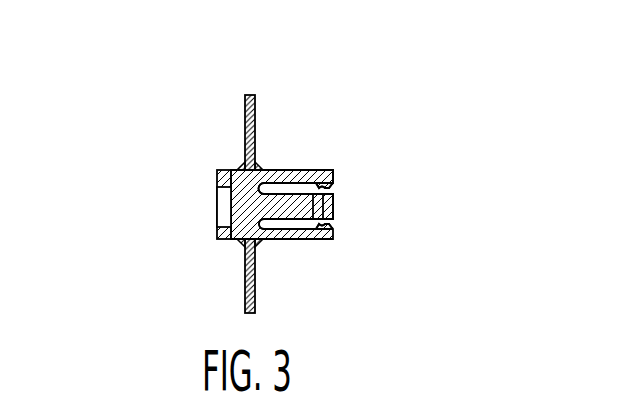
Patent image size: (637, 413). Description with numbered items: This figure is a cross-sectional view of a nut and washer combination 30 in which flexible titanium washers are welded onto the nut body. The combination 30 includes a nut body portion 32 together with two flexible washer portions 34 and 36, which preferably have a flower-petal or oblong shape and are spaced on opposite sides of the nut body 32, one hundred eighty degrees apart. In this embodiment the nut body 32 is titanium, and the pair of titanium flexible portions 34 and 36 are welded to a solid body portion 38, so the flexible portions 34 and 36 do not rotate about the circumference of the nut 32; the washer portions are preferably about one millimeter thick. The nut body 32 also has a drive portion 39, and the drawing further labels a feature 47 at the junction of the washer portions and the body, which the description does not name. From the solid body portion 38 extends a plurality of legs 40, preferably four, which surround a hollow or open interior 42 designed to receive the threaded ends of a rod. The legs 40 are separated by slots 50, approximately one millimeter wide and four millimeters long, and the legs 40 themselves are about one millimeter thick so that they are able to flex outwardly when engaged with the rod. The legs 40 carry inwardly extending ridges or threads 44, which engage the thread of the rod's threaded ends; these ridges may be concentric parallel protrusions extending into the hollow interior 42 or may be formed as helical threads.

The nut and washer combination 30 is at (289, 77).
The nut body portion 32 is at (217, 235).
The flexible washer portion 34 is at (245, 298).
The flexible washer portion 36 is at (245, 136).
The solid body portion 38 is at (217, 183).
The drive portion 39 is at (217, 207).
The legs 40 is at (334, 171).
The hollow interior 42 is at (334, 218).
The ridges 44 is at (334, 205).
The fillet 47 is at (241, 163).
The slots 50 is at (270, 186).